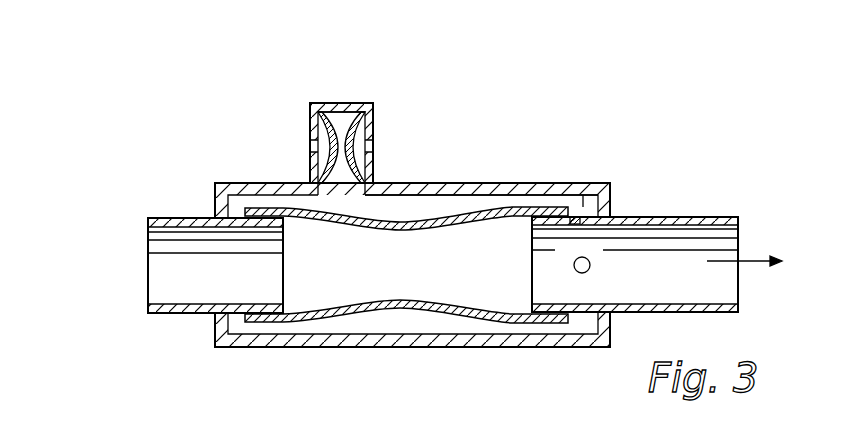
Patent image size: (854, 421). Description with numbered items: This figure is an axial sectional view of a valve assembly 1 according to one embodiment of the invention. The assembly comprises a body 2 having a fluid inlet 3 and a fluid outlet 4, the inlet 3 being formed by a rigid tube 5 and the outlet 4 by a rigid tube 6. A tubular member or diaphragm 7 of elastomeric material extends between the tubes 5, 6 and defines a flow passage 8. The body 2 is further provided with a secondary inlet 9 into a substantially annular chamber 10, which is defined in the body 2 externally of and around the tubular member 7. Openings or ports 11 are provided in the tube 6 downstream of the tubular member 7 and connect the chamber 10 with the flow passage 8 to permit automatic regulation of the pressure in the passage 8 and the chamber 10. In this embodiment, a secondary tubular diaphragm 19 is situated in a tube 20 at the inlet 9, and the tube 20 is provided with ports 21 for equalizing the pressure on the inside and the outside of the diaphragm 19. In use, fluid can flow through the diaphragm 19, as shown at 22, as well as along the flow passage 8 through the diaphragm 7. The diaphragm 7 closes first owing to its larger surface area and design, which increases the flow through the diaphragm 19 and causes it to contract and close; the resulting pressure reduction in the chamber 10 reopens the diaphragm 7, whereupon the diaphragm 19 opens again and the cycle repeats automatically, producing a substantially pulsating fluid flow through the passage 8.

The valve assembly 1 is at (268, 153).
The body 2 is at (435, 345).
The fluid inlet 3 is at (163, 277).
The fluid outlet 4 is at (718, 283).
The rigid tube 5 is at (163, 220).
The rigid tube 6 is at (695, 217).
The tubular member or diaphragm 7 is at (376, 310).
The flow passage 8 is at (470, 282).
The secondary inlet 9 is at (350, 206).
The annular chamber 10 is at (484, 205).
The openings or ports 11 is at (583, 207).
The secondary tubular diaphragm 19 is at (364, 132).
The tube 20 is at (373, 170).
The ports 21 is at (310, 147).
The fluid flow through the diaphragm 22 is at (343, 112).